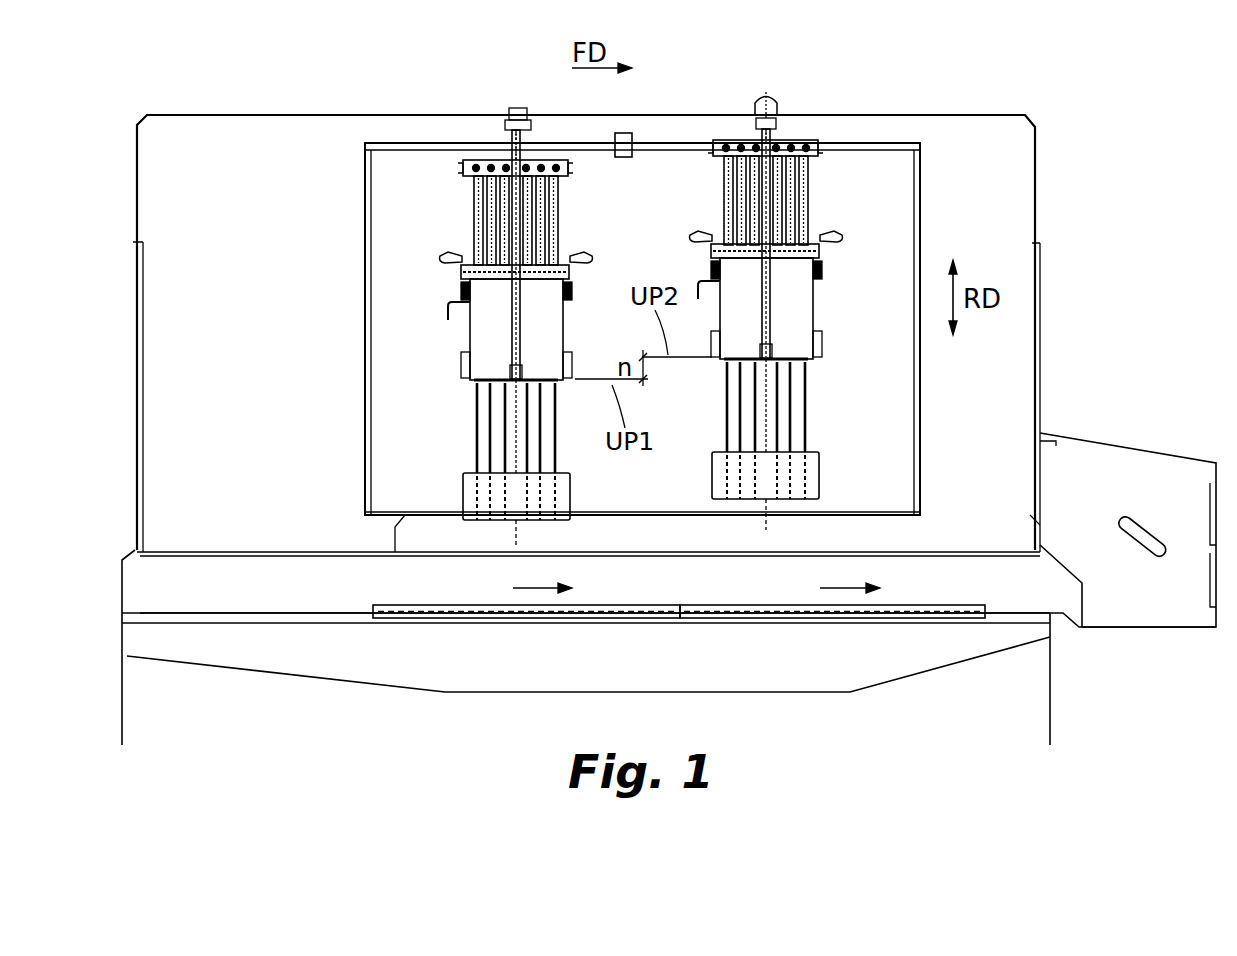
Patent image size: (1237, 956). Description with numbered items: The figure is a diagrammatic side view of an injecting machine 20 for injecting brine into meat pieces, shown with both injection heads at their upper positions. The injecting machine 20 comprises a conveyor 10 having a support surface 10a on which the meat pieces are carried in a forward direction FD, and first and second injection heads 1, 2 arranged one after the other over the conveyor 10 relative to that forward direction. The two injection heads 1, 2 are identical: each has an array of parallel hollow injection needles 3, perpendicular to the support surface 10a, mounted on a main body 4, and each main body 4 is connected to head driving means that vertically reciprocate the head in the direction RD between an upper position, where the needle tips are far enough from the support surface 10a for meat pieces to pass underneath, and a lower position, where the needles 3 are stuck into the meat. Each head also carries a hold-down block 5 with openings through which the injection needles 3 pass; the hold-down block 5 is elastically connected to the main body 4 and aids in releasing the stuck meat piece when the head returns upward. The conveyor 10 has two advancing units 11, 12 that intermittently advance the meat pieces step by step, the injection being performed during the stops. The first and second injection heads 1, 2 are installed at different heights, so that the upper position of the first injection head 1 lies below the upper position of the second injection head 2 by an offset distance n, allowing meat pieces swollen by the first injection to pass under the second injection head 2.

The injecting machine 20 is at (257, 93).
The first injection head 1 is at (450, 222).
The second injection head 2 is at (840, 280).
The injection needles 3 is at (477, 428).
The main body 4 is at (476, 330).
The hold-down block 5 is at (467, 490).
The conveyor 10 is at (543, 640).
The support surface 10a is at (250, 610).
The first advancing unit 11 is at (403, 618).
The second advancing unit 12 is at (925, 618).